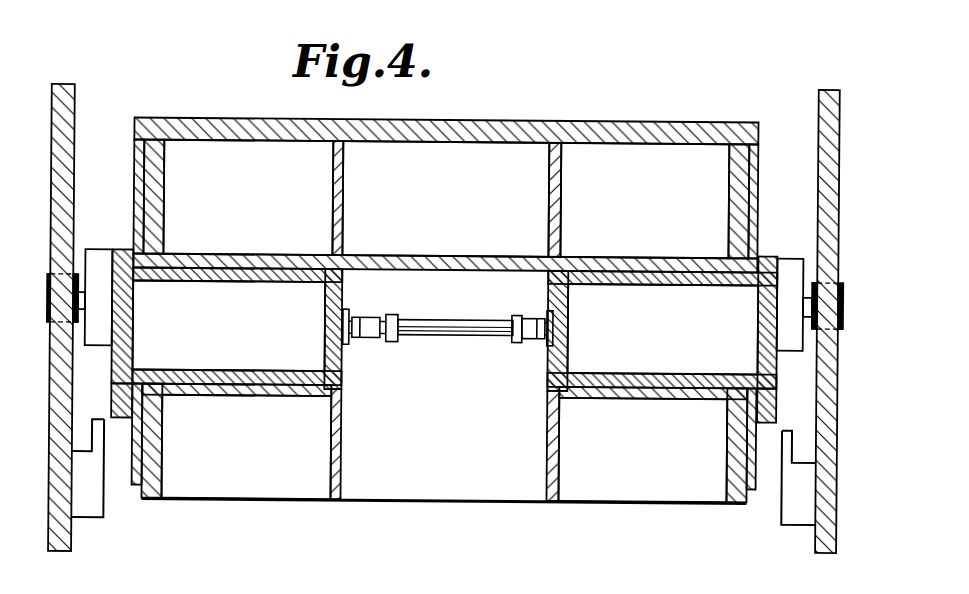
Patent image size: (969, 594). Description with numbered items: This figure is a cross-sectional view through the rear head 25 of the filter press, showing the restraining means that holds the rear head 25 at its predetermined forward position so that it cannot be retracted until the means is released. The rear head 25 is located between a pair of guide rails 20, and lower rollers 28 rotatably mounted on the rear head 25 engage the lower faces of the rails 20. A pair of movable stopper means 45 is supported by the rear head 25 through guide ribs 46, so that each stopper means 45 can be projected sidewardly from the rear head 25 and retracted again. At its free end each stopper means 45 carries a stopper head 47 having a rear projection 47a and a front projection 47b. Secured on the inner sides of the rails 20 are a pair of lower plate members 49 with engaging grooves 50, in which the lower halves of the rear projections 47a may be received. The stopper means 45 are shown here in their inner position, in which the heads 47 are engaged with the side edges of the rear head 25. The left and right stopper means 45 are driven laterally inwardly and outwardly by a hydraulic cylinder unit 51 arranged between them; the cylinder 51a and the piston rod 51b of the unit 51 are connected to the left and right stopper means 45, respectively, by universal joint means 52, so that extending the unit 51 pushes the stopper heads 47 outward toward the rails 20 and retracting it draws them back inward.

The guide rail 20 is at (60, 155).
The rear head 25 is at (594, 121).
The lower roller 28 is at (48, 306).
The movable stopper means 45 is at (251, 380).
The guide rib 46 is at (388, 258).
The stopper head 47 is at (118, 332).
The rear projection 47a is at (158, 421).
The front projection 47b is at (122, 255).
The lower plate member 49 is at (95, 502).
The engaging groove 50 is at (77, 448).
The hydraulic cylinder unit 51 is at (445, 336).
The cylinder 51a is at (480, 328).
The piston rod 51b is at (382, 318).
The universal joint means 52 is at (370, 338).